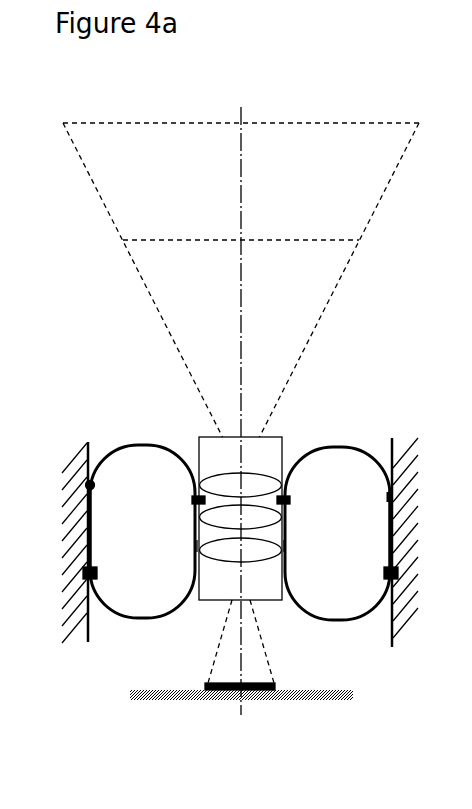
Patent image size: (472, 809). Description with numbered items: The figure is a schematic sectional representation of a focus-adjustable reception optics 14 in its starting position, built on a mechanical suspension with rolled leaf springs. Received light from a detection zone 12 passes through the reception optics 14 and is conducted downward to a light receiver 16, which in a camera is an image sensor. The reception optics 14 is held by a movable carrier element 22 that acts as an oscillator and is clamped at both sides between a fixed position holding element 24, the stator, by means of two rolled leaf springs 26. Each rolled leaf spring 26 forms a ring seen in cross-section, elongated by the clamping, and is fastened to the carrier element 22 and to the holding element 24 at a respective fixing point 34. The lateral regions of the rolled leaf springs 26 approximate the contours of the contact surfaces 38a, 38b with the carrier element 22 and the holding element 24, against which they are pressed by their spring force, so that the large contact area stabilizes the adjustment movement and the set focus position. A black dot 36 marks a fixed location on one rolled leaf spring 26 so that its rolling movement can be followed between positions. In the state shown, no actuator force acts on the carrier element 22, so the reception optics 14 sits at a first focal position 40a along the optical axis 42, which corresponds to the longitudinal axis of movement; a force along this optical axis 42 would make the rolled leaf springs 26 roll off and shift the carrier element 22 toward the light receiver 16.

The detection zone 12 is at (157, 305).
The reception optics 14 is at (262, 560).
The light receiver 16 is at (210, 690).
The movable carrier element 22 is at (199, 440).
The fixed position holding element 24 is at (85, 458).
The rolled leaf springs 26 is at (130, 620).
The fixing point 34 is at (195, 503).
The black dot 36 is at (98, 458).
The contact surface 38a is at (91, 500).
The contact surface 38b is at (196, 546).
The first focal position 40a is at (220, 240).
The optical axis 42 is at (240, 347).